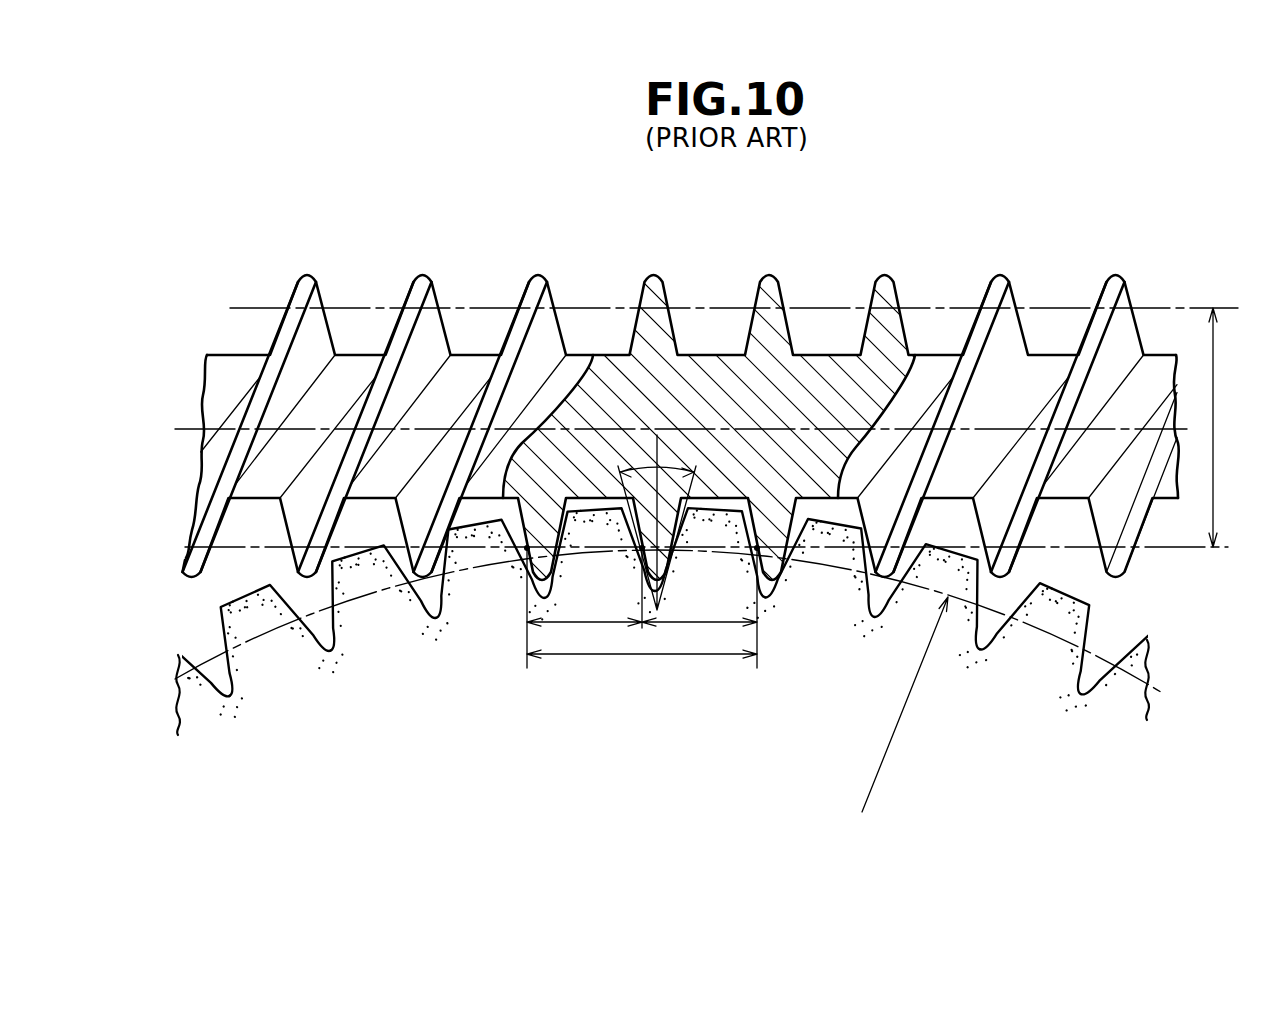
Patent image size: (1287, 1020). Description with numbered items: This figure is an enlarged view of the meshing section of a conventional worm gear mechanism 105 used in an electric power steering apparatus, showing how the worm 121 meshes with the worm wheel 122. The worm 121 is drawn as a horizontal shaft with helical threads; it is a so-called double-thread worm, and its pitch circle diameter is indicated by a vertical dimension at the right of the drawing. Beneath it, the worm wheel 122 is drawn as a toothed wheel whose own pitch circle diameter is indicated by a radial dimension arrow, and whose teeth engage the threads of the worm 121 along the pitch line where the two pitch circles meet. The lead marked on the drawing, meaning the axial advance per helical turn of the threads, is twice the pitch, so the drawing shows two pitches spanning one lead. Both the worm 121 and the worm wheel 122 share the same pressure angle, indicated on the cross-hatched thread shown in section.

The worm gear mechanism 105 is at (224, 215).
The worm 121 is at (1139, 254).
The worm wheel 122 is at (1118, 630).